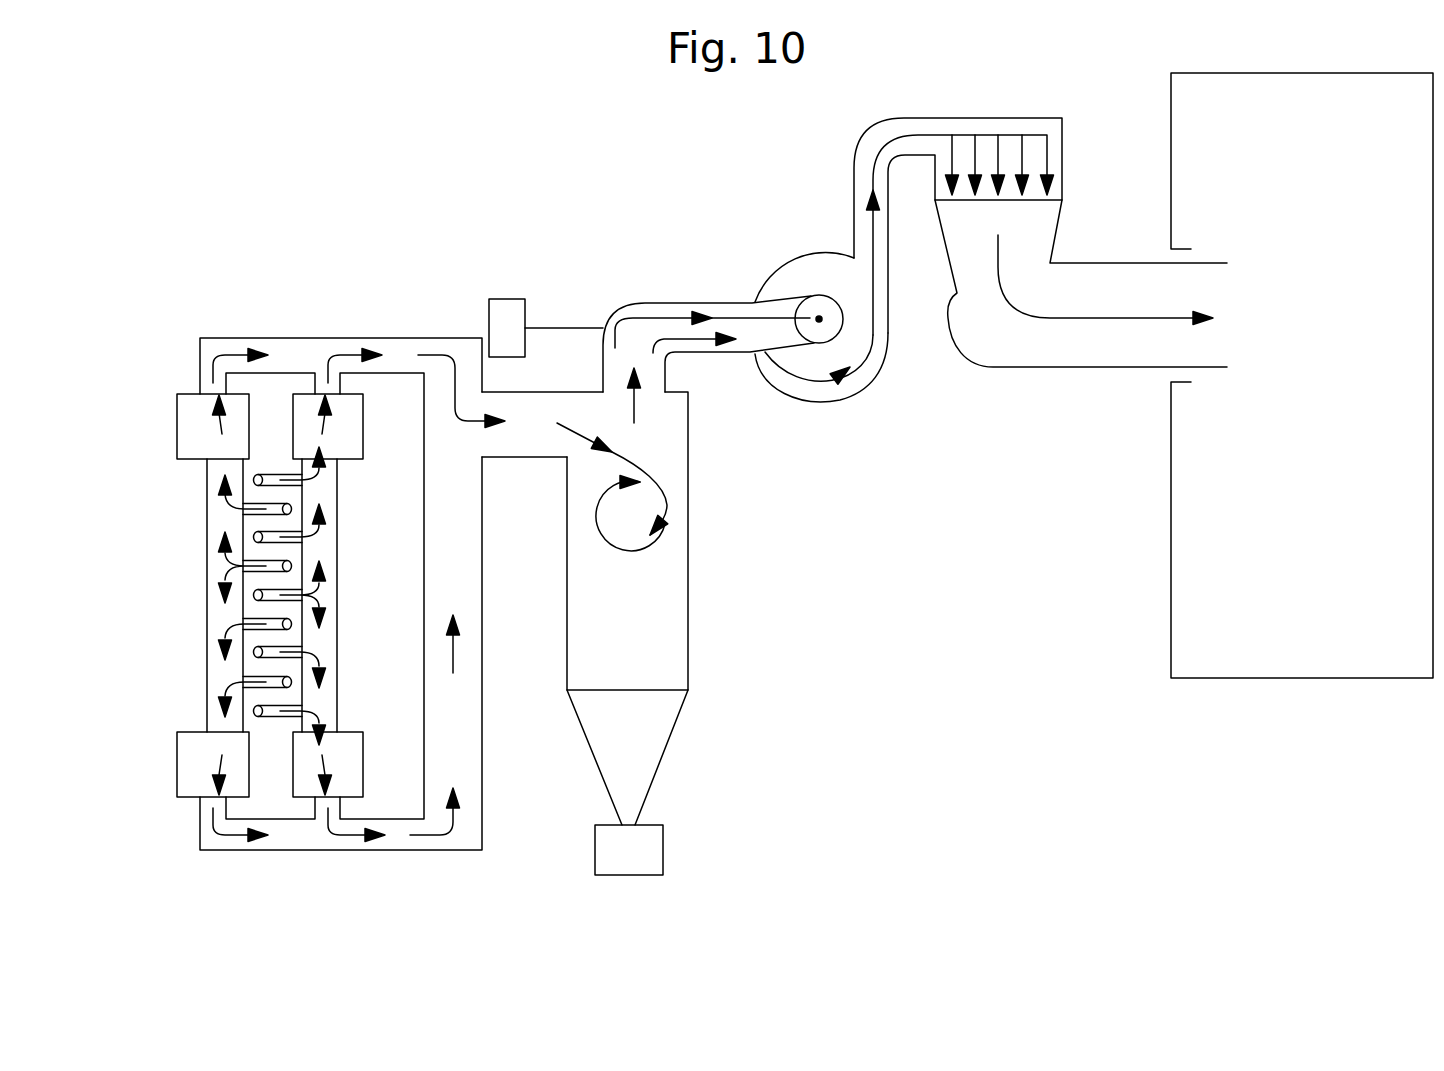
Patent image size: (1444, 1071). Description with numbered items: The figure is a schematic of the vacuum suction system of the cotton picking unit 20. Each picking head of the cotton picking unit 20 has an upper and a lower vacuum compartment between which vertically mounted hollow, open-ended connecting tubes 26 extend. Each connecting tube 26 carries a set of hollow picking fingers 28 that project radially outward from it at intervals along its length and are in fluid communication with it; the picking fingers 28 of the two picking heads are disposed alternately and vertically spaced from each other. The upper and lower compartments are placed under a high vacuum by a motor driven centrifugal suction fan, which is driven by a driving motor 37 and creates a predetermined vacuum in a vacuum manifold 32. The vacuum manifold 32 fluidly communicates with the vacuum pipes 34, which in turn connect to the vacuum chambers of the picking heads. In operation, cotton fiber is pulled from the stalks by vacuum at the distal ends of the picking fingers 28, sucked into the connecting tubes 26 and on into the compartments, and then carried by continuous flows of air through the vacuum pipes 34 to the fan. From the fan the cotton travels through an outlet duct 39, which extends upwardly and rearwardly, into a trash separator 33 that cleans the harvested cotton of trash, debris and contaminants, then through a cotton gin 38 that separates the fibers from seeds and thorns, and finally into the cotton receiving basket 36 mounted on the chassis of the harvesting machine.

The cotton picking unit 20 is at (296, 594).
The connecting tubes 26 is at (207, 523).
The picking fingers 28 is at (270, 650).
The vacuum manifold 32 is at (671, 302).
The trash separator 33 is at (688, 600).
The vacuum pipes 34 is at (517, 458).
The cotton receiving basket 36 is at (1283, 678).
The driving motor 37 is at (503, 298).
The cotton gin 38 is at (1063, 155).
The outlet duct 39 is at (853, 177).